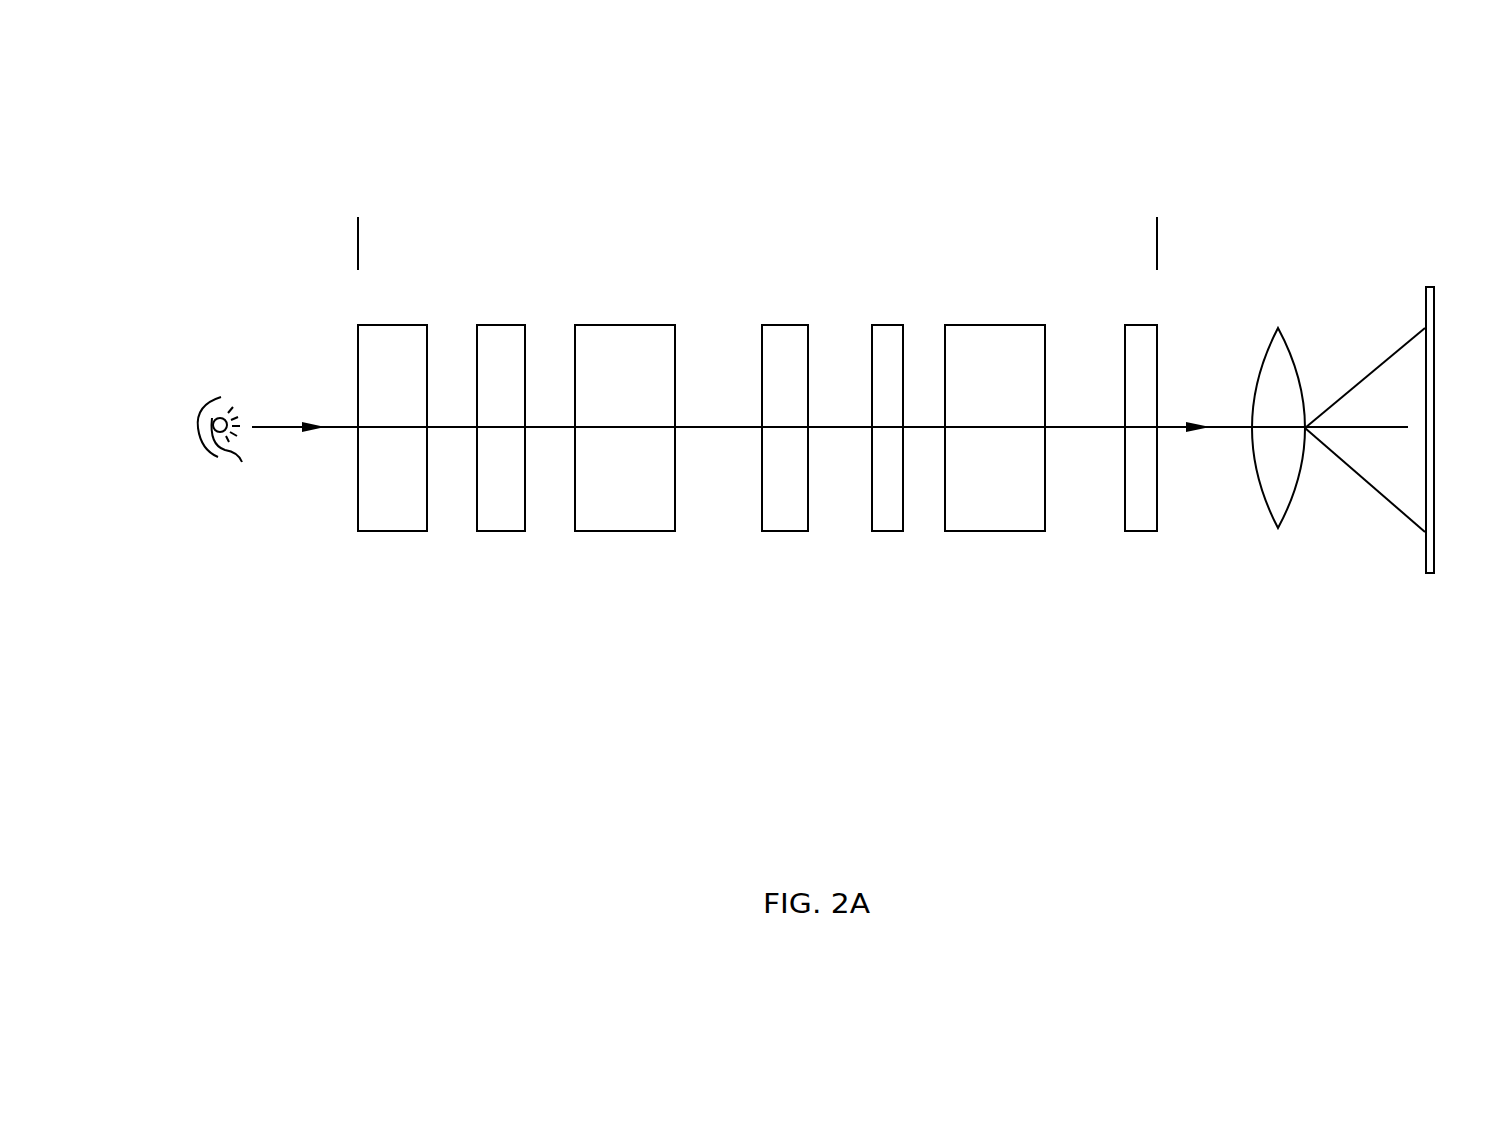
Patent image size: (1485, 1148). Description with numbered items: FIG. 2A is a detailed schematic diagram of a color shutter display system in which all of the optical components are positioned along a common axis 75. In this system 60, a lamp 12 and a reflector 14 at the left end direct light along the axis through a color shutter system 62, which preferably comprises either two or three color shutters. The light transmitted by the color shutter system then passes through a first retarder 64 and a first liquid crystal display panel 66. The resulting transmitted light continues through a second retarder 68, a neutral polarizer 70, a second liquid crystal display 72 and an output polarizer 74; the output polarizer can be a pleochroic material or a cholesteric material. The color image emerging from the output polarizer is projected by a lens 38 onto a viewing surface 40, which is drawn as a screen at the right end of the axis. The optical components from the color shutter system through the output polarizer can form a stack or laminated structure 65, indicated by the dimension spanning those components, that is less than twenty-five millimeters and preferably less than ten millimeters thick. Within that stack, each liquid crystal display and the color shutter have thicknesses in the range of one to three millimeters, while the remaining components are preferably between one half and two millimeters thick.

The lamp 12 is at (242, 461).
The reflector 14 is at (209, 398).
The lens 38 is at (1278, 530).
The viewing surface 40 is at (1423, 540).
The system 60 is at (585, 178).
The color shutter system 62 is at (390, 531).
The first retarder 64 is at (499, 531).
The stack or laminated structure 65 is at (1133, 227).
The first liquid crystal display panel 66 is at (623, 531).
The second retarder 68 is at (783, 531).
The neutral polarizer 70 is at (885, 531).
The second liquid crystal display 72 is at (992, 531).
The output polarizer 74 is at (1138, 531).
The common axis 75 is at (337, 428).